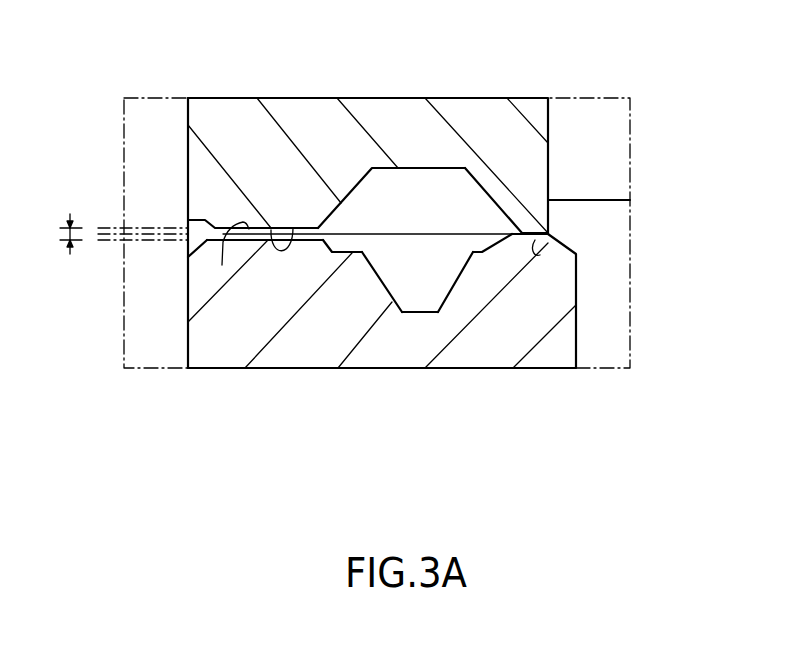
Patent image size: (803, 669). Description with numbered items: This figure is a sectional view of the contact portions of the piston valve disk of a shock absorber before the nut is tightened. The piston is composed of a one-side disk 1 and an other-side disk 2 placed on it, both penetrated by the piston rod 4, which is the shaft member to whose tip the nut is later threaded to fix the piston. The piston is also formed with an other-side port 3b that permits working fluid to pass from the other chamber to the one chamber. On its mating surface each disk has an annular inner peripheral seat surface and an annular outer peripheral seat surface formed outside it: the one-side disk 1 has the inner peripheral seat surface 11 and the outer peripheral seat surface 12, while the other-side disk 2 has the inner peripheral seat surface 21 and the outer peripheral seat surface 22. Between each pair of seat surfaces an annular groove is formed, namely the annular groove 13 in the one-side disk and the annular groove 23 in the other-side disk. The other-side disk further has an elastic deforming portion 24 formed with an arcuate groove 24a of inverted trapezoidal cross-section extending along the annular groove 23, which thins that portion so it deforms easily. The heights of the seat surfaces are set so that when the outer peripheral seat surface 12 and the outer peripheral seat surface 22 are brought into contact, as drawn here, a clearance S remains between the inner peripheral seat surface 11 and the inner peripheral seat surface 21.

The one-side disk 1 is at (424, 99).
The other-side disk 2 is at (544, 361).
The other-side port 3b is at (593, 230).
The piston rod 4 is at (137, 133).
The inner peripheral seat surface 11 is at (293, 228).
The outer peripheral seat surface 12 is at (535, 240).
The annular groove 13 is at (371, 166).
The inner peripheral seat surface 21 is at (222, 265).
The outer peripheral seat surface 22 is at (524, 232).
The annular groove 23 is at (482, 254).
The elastic deforming portion 24 is at (428, 345).
The arcuate groove 24a is at (402, 312).
The clearance S is at (108, 235).